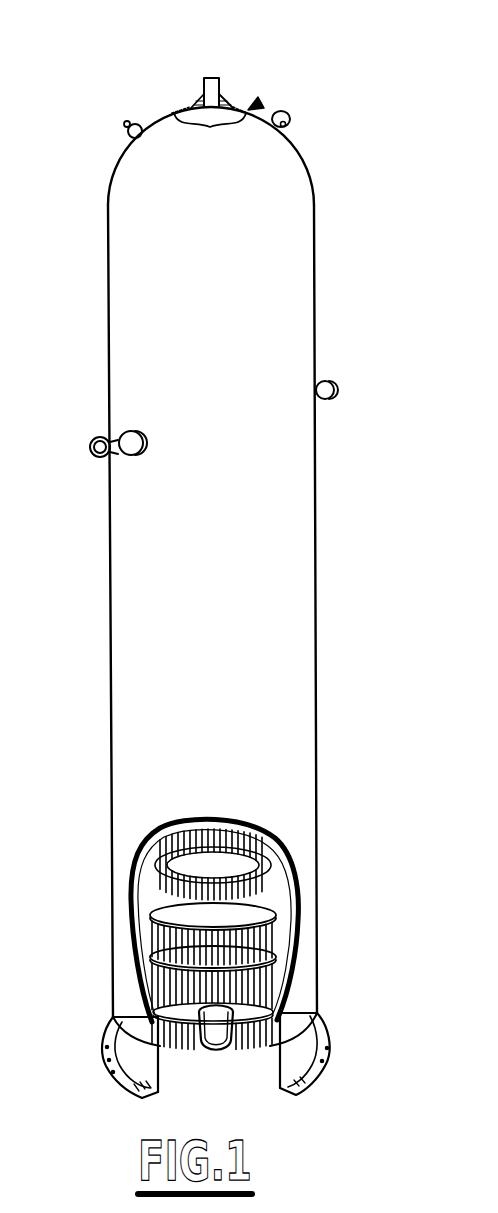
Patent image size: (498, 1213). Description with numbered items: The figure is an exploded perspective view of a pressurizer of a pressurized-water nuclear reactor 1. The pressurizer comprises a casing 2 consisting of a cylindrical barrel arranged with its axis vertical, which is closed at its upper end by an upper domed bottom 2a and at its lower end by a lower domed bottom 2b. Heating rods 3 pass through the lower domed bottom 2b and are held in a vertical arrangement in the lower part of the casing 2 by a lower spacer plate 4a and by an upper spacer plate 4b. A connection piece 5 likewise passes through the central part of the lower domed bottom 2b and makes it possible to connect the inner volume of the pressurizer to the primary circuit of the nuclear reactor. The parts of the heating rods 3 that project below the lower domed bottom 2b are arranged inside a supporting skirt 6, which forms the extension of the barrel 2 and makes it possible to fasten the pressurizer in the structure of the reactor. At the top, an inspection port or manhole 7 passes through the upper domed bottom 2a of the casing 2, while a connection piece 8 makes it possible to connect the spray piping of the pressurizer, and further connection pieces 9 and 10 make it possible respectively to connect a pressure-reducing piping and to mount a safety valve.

The pressurized-water nuclear reactor 1 is at (224, 559).
The casing 2 is at (300, 597).
The upper domed bottom 2a is at (130, 193).
The lower domed bottom 2b is at (283, 1010).
The heating rods 3 is at (257, 824).
The lower spacer plate 4a is at (272, 950).
The upper spacer plate 4b is at (255, 905).
The connection piece 5 is at (226, 1047).
The supporting skirt 6 is at (303, 1040).
The inspection port or manhole 7 is at (290, 131).
The connection piece 8 is at (195, 100).
The connection piece 9 is at (128, 124).
The connection piece 10 is at (254, 104).